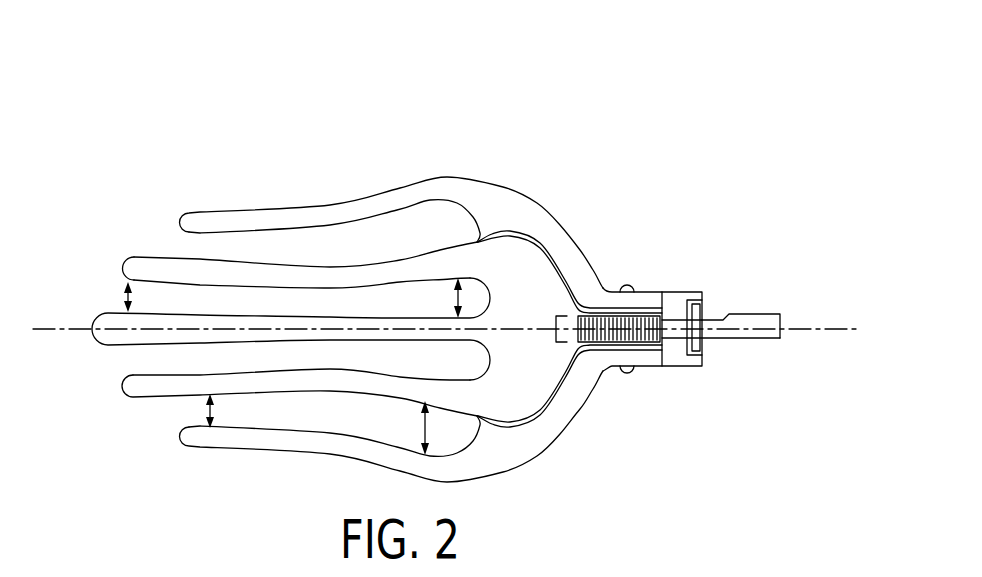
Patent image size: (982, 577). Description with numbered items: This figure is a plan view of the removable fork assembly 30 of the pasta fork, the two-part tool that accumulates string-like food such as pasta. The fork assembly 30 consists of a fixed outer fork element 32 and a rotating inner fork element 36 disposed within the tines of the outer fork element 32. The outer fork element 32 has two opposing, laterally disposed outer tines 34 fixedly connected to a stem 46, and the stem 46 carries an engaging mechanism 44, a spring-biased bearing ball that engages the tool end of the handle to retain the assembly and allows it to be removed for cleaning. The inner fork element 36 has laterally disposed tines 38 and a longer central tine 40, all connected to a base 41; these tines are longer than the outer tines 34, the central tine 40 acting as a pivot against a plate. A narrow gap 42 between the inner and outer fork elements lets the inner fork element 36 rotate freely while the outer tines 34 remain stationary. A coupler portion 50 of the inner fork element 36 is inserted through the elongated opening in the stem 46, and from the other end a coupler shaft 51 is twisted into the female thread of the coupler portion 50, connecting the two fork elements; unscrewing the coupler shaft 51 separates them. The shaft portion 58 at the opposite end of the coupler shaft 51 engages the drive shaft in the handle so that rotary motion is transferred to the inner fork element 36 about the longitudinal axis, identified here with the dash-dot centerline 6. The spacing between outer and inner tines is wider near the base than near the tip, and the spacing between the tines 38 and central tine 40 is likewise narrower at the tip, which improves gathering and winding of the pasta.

The fork assembly 30 is at (590, 108).
The outer fork element 32 is at (287, 192).
The outer tines 34 is at (226, 213).
The inner fork element 36 is at (137, 240).
The tines 38 is at (123, 265).
The central tine 40 is at (92, 337).
The base 41 is at (507, 257).
The gap 42 is at (552, 262).
The engaging mechanism 44 is at (628, 284).
The stem 46 is at (661, 367).
The coupler portion 50 is at (591, 343).
The coupler shaft 51 is at (743, 352).
The shaft portion 58 is at (740, 316).
The axis 6 is at (828, 322).